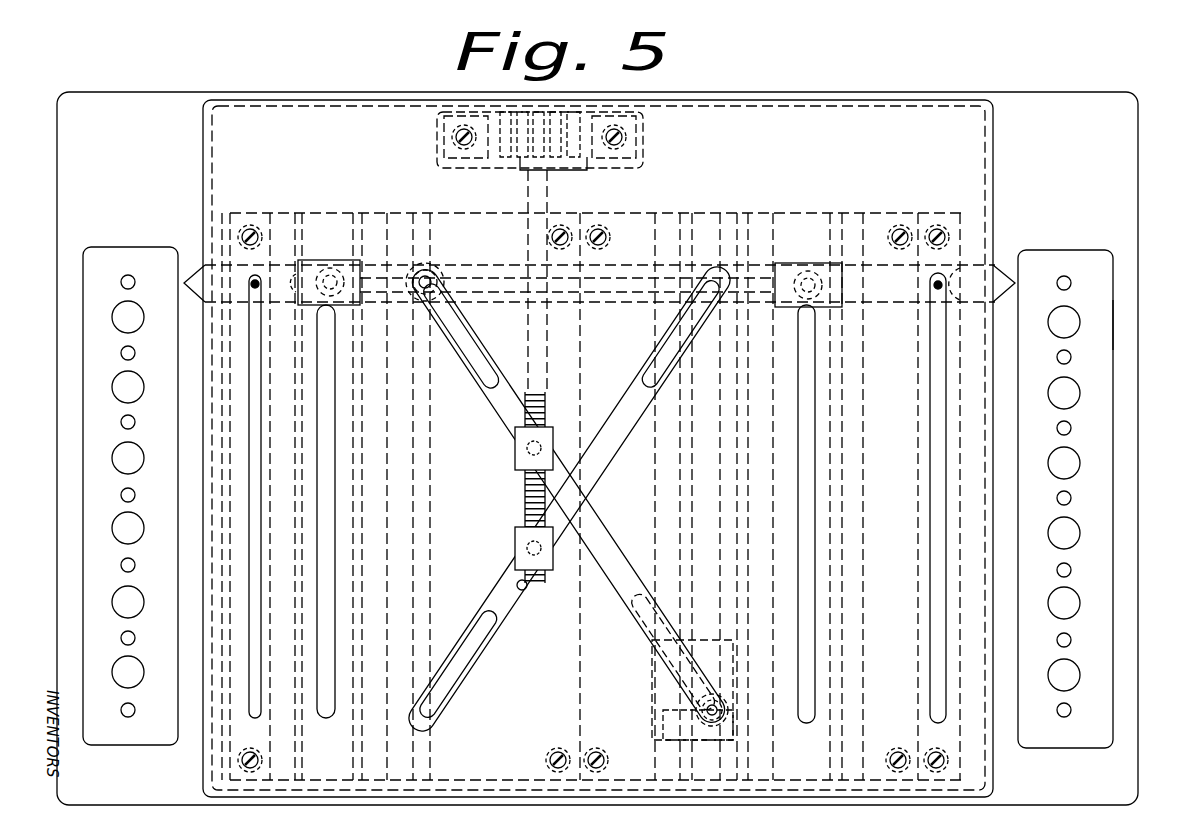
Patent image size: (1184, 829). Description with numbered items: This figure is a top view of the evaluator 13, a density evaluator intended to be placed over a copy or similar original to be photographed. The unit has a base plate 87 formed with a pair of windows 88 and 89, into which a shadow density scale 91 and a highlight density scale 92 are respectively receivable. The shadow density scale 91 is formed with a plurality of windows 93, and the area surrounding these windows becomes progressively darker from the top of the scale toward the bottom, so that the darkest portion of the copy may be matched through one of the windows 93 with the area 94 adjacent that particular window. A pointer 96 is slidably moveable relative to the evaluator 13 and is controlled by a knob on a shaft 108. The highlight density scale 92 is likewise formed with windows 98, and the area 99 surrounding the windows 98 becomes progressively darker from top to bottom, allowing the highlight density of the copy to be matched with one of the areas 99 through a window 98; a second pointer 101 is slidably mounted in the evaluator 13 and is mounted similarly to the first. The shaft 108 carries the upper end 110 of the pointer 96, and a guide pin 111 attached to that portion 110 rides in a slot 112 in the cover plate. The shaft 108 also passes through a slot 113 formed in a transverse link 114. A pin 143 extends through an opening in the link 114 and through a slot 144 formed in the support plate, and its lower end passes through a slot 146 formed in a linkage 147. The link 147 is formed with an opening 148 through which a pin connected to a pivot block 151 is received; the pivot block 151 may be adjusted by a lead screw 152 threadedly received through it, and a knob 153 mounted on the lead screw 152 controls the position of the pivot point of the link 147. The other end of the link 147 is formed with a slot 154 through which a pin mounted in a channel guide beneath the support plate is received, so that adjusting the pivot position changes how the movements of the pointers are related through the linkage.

The evaluator 13 is at (1034, 82).
The base plate 87 is at (1097, 105).
The window 88 is at (93, 489).
The window 89 is at (1089, 476).
The shadow density scale 91 is at (1112, 326).
The highlight density scale 92 is at (88, 322).
The windows 93 is at (1070, 325).
The area 94 is at (1104, 301).
The pointer 96 is at (200, 265).
The windows 98 is at (118, 668).
The area 99 is at (164, 660).
The pointer 101 is at (1000, 272).
The shaft 108 is at (366, 258).
The upper end of pointer 110 is at (224, 262).
The guide pin 111 is at (258, 278).
The slot 112 is at (252, 700).
The slot 113 is at (312, 262).
The transverse link 114 is at (470, 270).
The pin 143 is at (432, 270).
The slot 144 is at (432, 522).
The slot 146 is at (440, 695).
The linkage 147 is at (506, 606).
The opening 148 is at (525, 589).
The pivot block 151 is at (513, 540).
The lead screw 152 is at (547, 385).
The knob 153 is at (585, 160).
The slot 154 is at (655, 628).